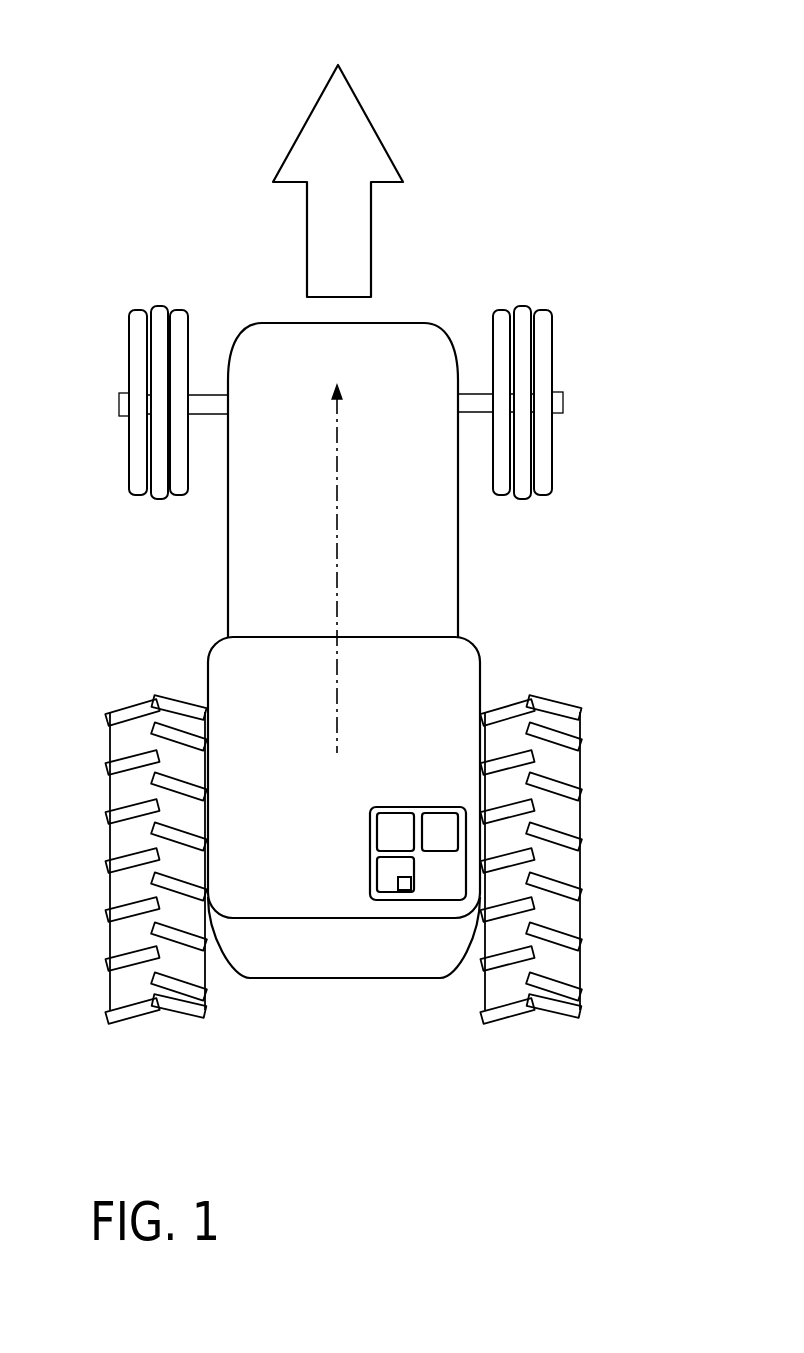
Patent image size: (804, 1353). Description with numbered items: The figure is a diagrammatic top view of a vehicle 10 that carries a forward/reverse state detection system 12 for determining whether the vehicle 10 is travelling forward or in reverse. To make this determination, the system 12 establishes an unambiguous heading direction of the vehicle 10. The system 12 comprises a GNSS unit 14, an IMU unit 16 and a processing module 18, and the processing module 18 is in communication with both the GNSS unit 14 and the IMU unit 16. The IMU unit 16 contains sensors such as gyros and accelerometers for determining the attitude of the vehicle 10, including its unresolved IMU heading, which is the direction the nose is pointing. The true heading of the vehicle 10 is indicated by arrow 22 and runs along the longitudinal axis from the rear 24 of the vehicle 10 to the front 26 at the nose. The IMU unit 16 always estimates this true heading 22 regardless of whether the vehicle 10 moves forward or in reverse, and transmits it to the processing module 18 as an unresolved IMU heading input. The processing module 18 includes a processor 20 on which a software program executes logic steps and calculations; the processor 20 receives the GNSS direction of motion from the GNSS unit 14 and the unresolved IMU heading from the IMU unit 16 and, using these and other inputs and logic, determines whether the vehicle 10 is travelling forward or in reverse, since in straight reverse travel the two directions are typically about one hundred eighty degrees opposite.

The vehicle 10 is at (112, 110).
The forward/reverse state detection system 12 is at (447, 878).
The GNSS unit 14 is at (401, 833).
The IMU unit 16 is at (435, 833).
The processing module 18 is at (388, 875).
The processor 20 is at (407, 883).
The true heading 22 is at (319, 569).
The rear 24 is at (429, 1077).
The front 26 is at (396, 302).